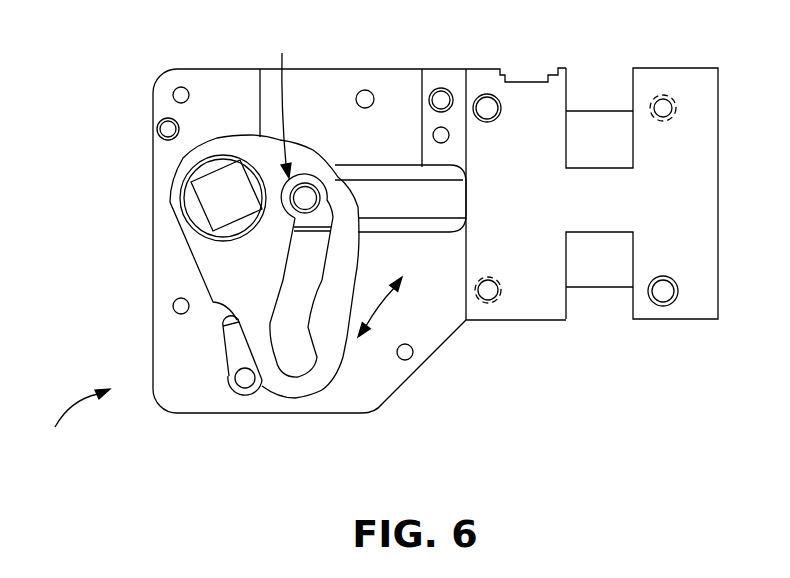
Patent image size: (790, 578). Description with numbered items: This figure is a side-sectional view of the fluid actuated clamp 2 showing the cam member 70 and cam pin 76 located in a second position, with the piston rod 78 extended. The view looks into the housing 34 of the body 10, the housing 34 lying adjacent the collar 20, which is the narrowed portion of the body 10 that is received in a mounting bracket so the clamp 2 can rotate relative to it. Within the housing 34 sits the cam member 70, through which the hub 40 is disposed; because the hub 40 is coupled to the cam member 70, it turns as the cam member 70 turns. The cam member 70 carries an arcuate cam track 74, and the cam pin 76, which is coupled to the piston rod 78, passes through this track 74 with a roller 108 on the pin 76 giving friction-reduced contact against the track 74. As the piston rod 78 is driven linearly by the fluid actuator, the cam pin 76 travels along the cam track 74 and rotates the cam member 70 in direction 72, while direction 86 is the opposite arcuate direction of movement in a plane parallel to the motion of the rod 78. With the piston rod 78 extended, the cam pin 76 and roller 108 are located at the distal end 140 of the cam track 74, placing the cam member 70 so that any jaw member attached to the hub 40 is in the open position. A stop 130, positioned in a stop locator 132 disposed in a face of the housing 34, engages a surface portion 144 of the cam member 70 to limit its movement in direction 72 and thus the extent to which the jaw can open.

The fluid actuated clamp 2 is at (76, 425).
The body 10 is at (527, 78).
The collar 20 is at (599, 287).
The housing 34 is at (207, 70).
The hub 40 is at (197, 187).
The cam member 70 is at (298, 152).
The direction 72 is at (368, 340).
The cam track 74 is at (305, 363).
The cam pin 76 is at (307, 195).
The piston rod 78 is at (395, 205).
The direction 86 is at (405, 287).
The roller 108 is at (360, 205).
The stop 130 is at (237, 358).
The stop locator 132 is at (256, 390).
The distal end 140 is at (288, 102).
The surface portion 144 is at (240, 340).